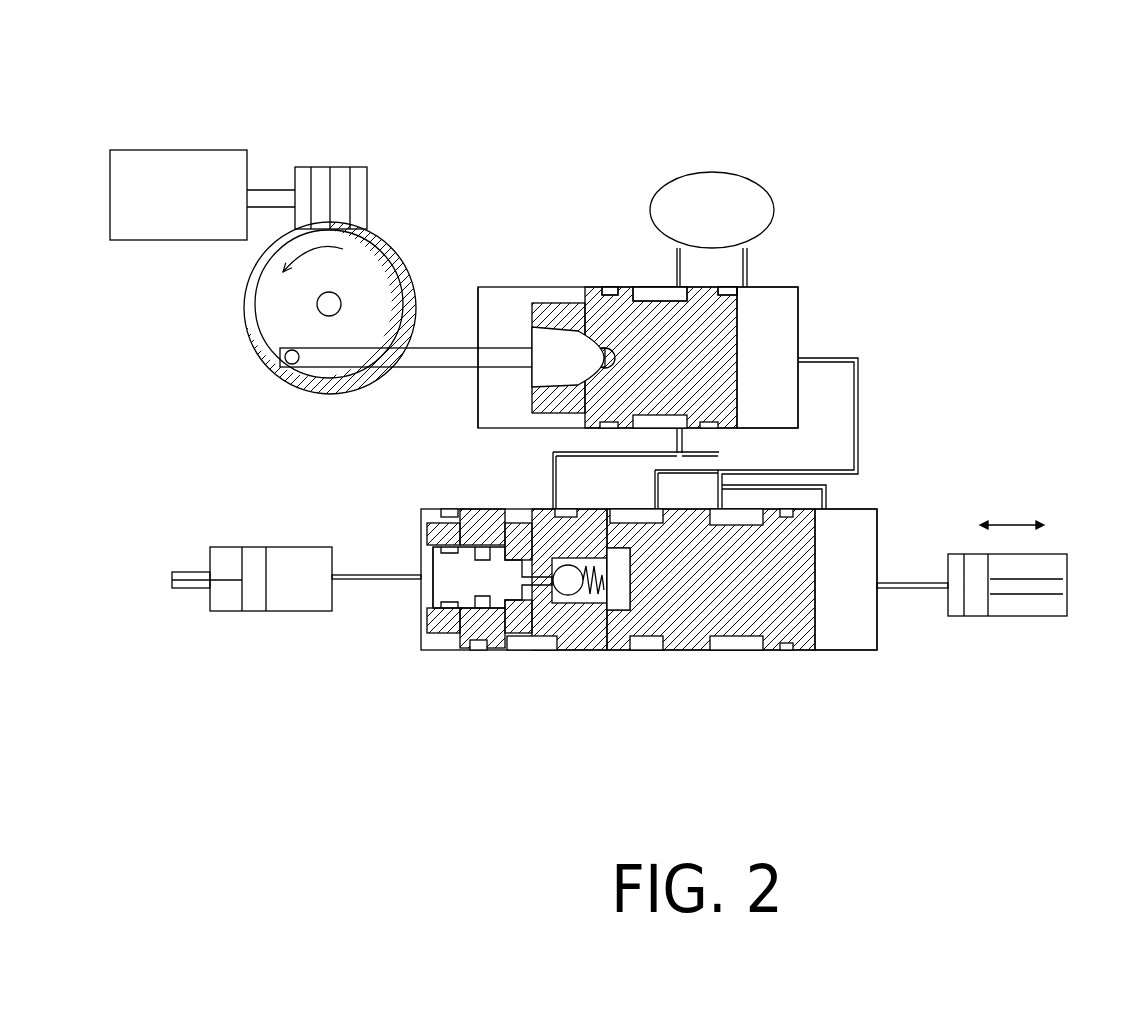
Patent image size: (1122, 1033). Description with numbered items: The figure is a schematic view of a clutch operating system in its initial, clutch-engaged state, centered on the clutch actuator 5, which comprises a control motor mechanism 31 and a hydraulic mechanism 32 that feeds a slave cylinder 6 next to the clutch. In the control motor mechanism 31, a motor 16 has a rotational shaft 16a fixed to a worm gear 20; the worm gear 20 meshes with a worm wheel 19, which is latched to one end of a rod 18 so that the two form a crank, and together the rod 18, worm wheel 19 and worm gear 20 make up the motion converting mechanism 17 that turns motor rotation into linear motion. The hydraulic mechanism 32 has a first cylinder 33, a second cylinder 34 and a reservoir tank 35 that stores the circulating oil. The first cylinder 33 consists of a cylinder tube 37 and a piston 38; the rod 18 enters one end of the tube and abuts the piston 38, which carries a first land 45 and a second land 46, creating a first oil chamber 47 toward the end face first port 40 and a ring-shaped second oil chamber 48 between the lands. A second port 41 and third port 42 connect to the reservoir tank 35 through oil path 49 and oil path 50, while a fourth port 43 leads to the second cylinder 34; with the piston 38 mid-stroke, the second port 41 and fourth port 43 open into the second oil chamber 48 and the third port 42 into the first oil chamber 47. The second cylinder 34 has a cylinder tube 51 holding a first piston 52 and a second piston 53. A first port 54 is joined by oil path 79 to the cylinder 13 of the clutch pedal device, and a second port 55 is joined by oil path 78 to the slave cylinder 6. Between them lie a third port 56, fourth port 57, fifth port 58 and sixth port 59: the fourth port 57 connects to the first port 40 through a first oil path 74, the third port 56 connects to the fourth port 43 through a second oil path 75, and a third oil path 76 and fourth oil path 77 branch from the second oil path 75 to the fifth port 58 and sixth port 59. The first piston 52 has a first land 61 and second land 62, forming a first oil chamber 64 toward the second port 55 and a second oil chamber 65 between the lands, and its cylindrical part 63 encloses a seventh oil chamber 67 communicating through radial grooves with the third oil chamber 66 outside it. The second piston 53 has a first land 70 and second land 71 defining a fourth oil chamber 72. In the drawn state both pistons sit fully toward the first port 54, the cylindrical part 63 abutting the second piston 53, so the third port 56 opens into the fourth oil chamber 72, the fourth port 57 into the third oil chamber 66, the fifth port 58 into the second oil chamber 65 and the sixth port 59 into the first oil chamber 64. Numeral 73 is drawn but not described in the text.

The clutch actuator 5 is at (777, 133).
The slave cylinder 6 is at (1015, 620).
The cylinder 13 is at (292, 622).
The motor 16 is at (197, 150).
The rotational shaft 16a is at (273, 195).
The motion converting mechanism 17 is at (268, 383).
The rod 18 is at (441, 348).
The worm wheel 19 is at (377, 278).
The worm gear 20 is at (330, 192).
The control motor mechanism 31 is at (430, 163).
The hydraulic mechanism 32 is at (905, 282).
The first cylinder 33 is at (566, 264).
The second cylinder 34 is at (630, 754).
The reservoir tank 35 is at (774, 196).
The cylinder tube 37 is at (510, 283).
The piston 38 is at (650, 286).
The first port 40 is at (806, 358).
The second port 41 is at (660, 300).
The third port 42 is at (748, 286).
The fourth port 43 is at (684, 434).
The first land 45 is at (712, 287).
The second land 46 is at (610, 286).
The first oil chamber 47 is at (792, 338).
The second oil chamber 48 is at (648, 287).
The oil path 49 is at (677, 247).
The oil path 50 is at (748, 250).
The cylinder tube 51 is at (815, 668).
The first piston 52 is at (733, 650).
The second piston 53 is at (517, 650).
The first port 54 is at (418, 573).
The second port 55 is at (880, 570).
The third port 56 is at (550, 503).
The fourth port 57 is at (640, 502).
The fifth port 58 is at (762, 482).
The sixth port 59 is at (837, 512).
The first land 61 is at (840, 510).
The second land 62 is at (675, 508).
The cylindrical part 63 is at (622, 652).
The first oil chamber 64 is at (850, 607).
The second oil chamber 65 is at (752, 657).
The third oil chamber 66 is at (643, 655).
The seventh oil chamber 67 is at (622, 586).
The first land 70 is at (585, 650).
The second land 71 is at (480, 653).
The fourth oil chamber 72 is at (518, 515).
The seal 73 is at (425, 520).
The first oil path 74 is at (858, 408).
The second oil path 75 is at (580, 448).
The third oil path 76 is at (712, 509).
The fourth oil path 77 is at (813, 483).
The oil path 78 is at (908, 582).
The oil path 79 is at (355, 573).